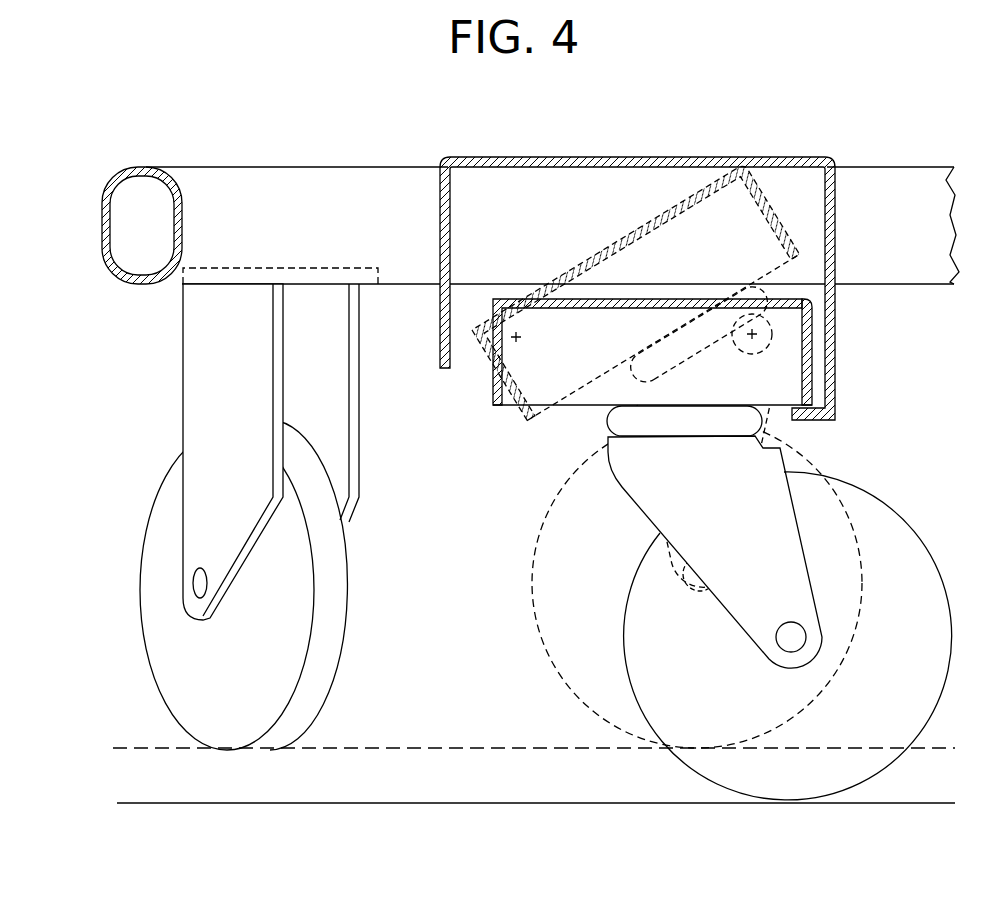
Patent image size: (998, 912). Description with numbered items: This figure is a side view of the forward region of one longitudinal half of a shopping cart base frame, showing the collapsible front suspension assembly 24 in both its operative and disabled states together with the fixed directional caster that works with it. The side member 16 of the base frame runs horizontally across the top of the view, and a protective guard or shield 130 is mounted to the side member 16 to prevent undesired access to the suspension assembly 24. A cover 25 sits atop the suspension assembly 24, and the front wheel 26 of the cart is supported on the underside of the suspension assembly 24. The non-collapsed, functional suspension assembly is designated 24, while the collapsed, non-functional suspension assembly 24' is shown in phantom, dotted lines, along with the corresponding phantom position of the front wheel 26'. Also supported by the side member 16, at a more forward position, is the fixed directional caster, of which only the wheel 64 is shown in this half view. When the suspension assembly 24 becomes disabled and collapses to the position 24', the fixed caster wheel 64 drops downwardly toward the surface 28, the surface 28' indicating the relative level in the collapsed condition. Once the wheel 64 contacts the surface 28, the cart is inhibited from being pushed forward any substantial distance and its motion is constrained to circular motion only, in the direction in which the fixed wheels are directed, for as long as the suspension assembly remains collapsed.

The side member 16 is at (348, 167).
The protective guard or shield 130 is at (578, 157).
The collapsible front suspension assembly 24 is at (628, 388).
The collapsed suspension assembly 24' is at (626, 305).
The cover 25 is at (807, 358).
The front wheel 26 is at (789, 603).
The front wheel in collapsed position 26' is at (665, 576).
The surface 28 is at (533, 832).
The surface in collapsed state 28' is at (515, 707).
The fixed directional caster wheel 64 is at (150, 590).